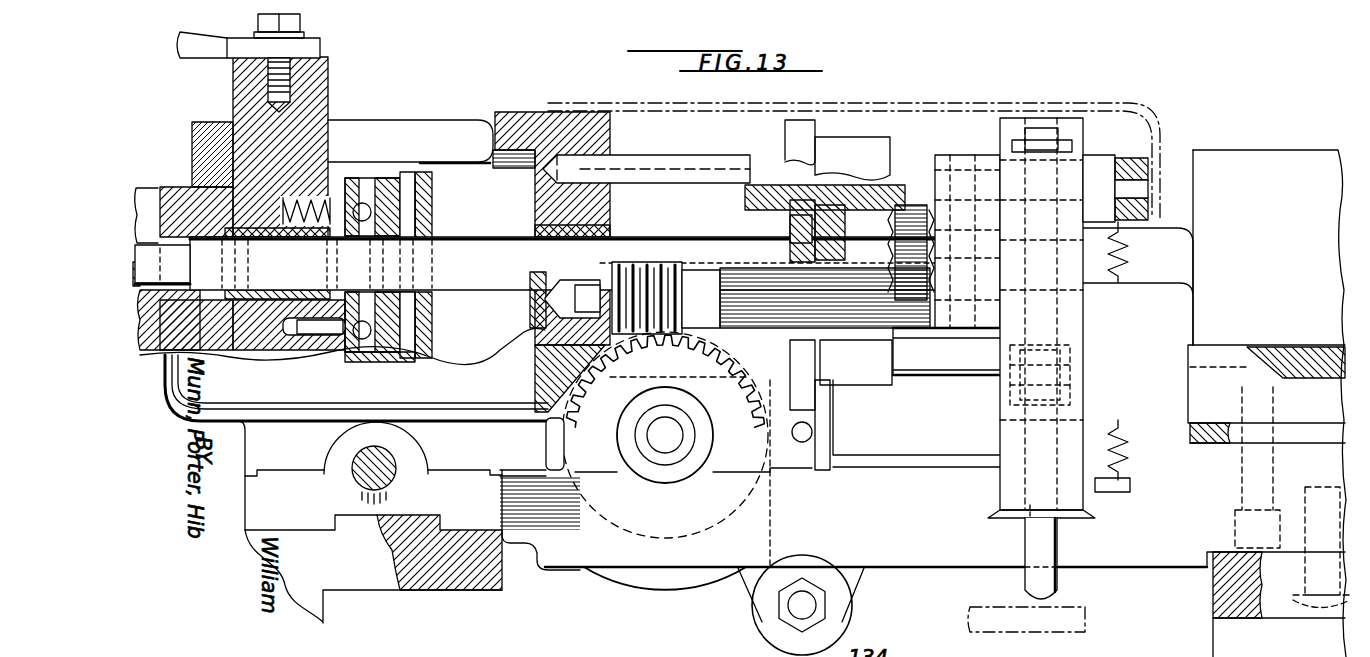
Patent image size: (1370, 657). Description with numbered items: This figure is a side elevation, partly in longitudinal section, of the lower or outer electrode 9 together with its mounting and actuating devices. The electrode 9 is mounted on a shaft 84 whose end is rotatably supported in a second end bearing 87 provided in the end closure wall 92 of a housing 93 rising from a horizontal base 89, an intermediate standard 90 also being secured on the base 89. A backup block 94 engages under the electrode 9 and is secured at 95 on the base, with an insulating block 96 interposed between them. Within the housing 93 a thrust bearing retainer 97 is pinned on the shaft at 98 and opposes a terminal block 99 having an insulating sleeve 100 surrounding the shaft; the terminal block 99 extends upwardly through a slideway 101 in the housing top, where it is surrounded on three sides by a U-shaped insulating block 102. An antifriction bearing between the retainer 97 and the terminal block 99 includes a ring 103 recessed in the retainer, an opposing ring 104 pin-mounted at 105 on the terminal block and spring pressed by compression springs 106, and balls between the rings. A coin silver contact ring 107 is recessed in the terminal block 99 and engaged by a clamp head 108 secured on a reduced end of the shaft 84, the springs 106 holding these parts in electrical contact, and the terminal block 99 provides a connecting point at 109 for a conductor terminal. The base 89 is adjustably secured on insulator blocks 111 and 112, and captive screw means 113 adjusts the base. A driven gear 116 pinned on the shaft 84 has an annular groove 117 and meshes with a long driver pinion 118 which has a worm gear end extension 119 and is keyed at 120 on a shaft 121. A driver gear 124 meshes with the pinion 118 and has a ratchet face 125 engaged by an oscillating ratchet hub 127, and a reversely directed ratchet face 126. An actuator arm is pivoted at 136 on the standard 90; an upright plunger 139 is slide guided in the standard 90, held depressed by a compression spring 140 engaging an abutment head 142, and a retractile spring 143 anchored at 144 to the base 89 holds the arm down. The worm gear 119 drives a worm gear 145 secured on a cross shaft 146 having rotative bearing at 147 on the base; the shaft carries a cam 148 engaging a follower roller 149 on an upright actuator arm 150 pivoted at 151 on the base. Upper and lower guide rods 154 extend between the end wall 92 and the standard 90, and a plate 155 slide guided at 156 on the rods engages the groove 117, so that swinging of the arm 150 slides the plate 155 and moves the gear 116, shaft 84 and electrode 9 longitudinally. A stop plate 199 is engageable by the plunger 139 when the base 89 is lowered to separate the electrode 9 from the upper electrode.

The outer electrode 9 is at (1268, 152).
The shaft 84 is at (498, 238).
The second end bearing 87 is at (545, 245).
The horizontal base 89 is at (950, 570).
The intermediate standard 90 is at (1000, 415).
The end closure wall 92 is at (540, 330).
The housing 93 is at (186, 424).
The backup block 94 is at (1195, 386).
The securing point of backup block 95 is at (1245, 482).
The insulating block 96 is at (1192, 428).
The thrust bearing retainer 97 is at (388, 178).
The pin 98 is at (430, 182).
The terminal block 99 is at (328, 72).
The insulating sleeve 100 is at (255, 355).
The slideway 101 is at (440, 135).
The U-shaped insulating block 102 is at (205, 122).
The ring 103 is at (388, 330).
The opposing ring 104 is at (340, 358).
The pin mounting 105 is at (310, 340).
The compression springs 106 is at (332, 186).
The contact ring 107 is at (172, 398).
The clamp head 108 is at (160, 348).
The connecting point 109 is at (300, 44).
The insulator block 111 is at (455, 578).
The insulator block 112 is at (1215, 600).
The captive screw means 113 is at (353, 478).
The driven gear 116 is at (880, 165).
The annular groove 117 is at (835, 200).
The long driver pinion 118 is at (770, 268).
The worm gear end extension 119 is at (660, 268).
The key 120 is at (710, 270).
The shaft 121 is at (540, 300).
The driver gear 124 is at (905, 215).
The ratchet face 125 is at (985, 335).
The reversely directed ratchet face 126 is at (856, 362).
The ratchet hub 127 is at (995, 262).
The pivot 136 is at (1088, 152).
The upright plunger 139 is at (1045, 545).
The compression spring 140 is at (1020, 418).
The abutment head 142 is at (1010, 452).
The retractile spring 143 is at (1140, 285).
The anchor point 144 is at (1122, 492).
The worm gear 145 is at (562, 440).
The cross shaft 146 is at (663, 425).
The rotative bearing 147 is at (672, 462).
The cam 148 is at (648, 572).
The follower roller 149 is at (848, 444).
The upright actuator arm 150 is at (826, 480).
The pivot 151 is at (795, 605).
The guide rods 154 is at (712, 170).
The plate 155 is at (805, 120).
The slide guide 156 is at (825, 150).
The stop plate 199 is at (1039, 603).